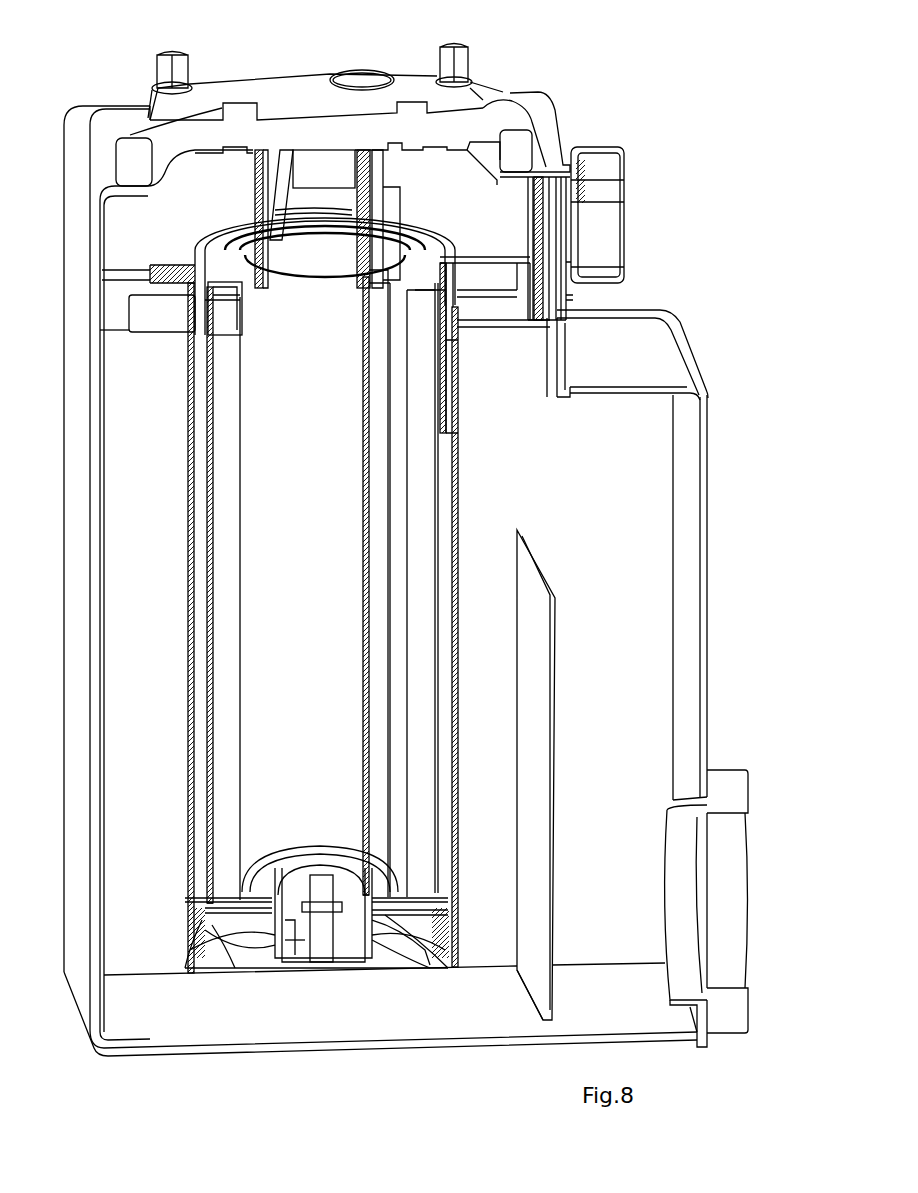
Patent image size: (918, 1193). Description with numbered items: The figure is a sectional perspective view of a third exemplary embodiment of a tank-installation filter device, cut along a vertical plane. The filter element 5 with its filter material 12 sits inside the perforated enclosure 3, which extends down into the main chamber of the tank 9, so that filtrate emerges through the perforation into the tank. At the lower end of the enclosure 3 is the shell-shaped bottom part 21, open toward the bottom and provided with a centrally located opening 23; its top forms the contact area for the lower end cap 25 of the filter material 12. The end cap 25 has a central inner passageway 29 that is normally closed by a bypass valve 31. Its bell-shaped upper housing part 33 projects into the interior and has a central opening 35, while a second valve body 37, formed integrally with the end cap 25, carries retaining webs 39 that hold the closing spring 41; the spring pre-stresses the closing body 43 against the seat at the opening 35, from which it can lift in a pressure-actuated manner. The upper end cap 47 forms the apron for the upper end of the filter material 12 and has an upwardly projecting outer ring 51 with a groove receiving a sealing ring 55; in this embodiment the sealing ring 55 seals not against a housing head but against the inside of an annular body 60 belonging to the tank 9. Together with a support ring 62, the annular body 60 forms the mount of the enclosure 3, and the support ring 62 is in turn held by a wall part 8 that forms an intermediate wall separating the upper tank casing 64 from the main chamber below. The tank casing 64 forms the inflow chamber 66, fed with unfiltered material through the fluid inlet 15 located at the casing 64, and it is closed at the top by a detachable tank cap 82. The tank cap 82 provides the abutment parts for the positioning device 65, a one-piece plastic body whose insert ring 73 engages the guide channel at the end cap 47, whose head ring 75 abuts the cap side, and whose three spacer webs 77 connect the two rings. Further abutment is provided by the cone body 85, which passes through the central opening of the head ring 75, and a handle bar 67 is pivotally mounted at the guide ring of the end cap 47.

The enclosure 3 is at (190, 470).
The filter element 5 is at (208, 715).
The wall part 8 is at (92, 380).
The tank 9 is at (683, 522).
The filter material 12 is at (228, 605).
The fluid inlet 15 is at (550, 157).
The bottom part 21 is at (200, 908).
The opening 23 is at (405, 942).
The end cap 25 is at (420, 888).
The inner passageway 29 is at (223, 948).
The bypass valve 31 is at (314, 888).
The upper housing part 33 is at (380, 855).
The central opening 35 is at (302, 830).
The second valve body 37 is at (340, 960).
The retaining webs 39 is at (268, 950).
The closing spring 41 is at (290, 955).
The closing body 43 is at (262, 868).
The end cap 47 is at (230, 292).
The outer ring 51 is at (222, 246).
The sealing ring 55 is at (458, 256).
The annular body 60 is at (456, 300).
The support ring 62 is at (165, 335).
The tank casing 64 is at (560, 265).
The positioning device 65 is at (222, 197).
The inflow chamber 66 is at (160, 190).
The handle bar 67 is at (428, 234).
The insert ring 73 is at (370, 272).
The head ring 75 is at (348, 150).
The spacer webs 77 is at (254, 204).
The tank cap 82 is at (487, 126).
The cone body 85 is at (384, 180).